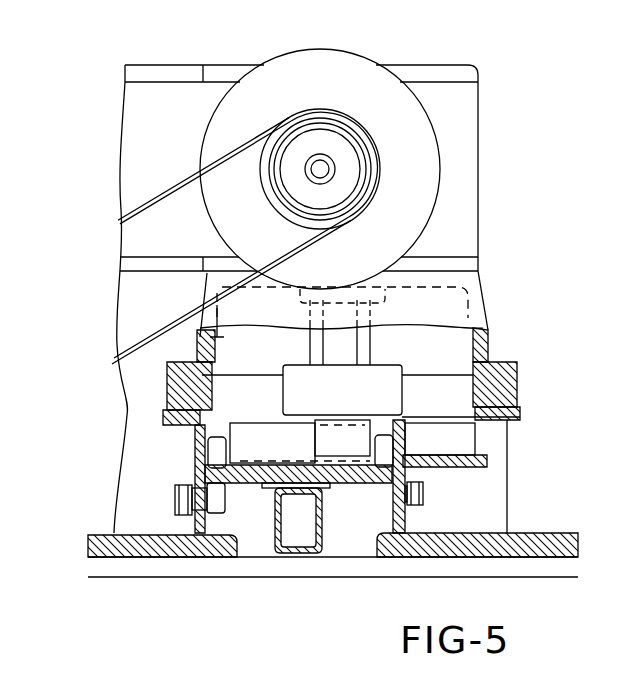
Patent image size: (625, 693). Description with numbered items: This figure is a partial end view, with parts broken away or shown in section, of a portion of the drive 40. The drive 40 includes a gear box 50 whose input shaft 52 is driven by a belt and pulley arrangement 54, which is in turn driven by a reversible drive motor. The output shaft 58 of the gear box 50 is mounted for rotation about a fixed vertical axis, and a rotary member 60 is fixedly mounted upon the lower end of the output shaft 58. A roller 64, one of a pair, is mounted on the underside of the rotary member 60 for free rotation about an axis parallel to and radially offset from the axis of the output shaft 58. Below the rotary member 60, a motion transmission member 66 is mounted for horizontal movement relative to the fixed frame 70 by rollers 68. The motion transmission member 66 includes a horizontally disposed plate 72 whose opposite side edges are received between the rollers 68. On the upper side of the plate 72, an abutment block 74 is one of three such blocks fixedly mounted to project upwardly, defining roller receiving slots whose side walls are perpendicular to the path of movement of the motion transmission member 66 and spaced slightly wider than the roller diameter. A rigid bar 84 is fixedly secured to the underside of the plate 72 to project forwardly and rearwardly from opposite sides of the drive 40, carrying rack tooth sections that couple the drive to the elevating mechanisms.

The drive 40 is at (527, 118).
The gear box 50 is at (427, 90).
The input shaft 52 is at (322, 170).
The belt and pulley arrangement 54 is at (248, 134).
The output shaft 58 is at (368, 348).
The rotary member 60 is at (378, 399).
The roller 64 is at (315, 438).
The motion transmission member 66 is at (234, 474).
The rollers 68 is at (210, 487).
The fixed frame 70 is at (479, 532).
The plate 72 is at (340, 488).
The abutment block 74 is at (242, 427).
The rigid bar 84 is at (278, 553).